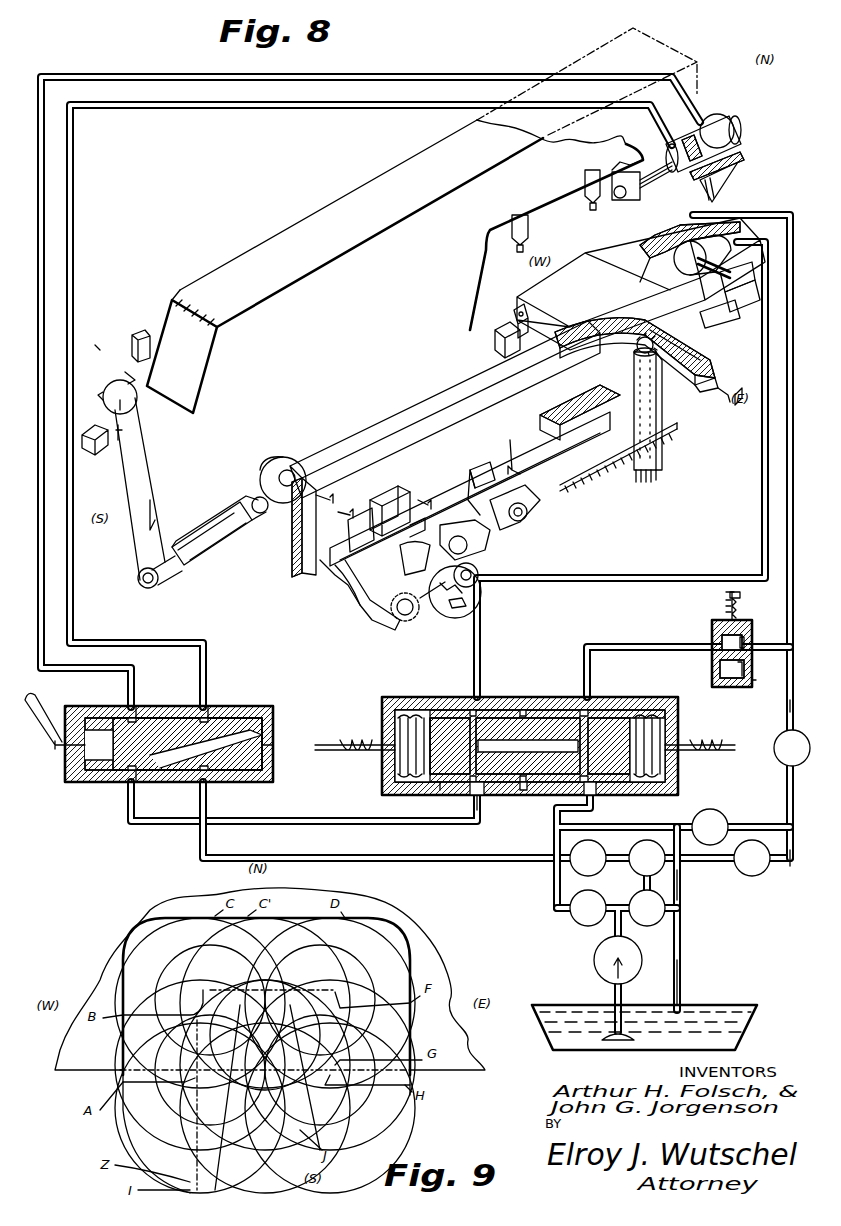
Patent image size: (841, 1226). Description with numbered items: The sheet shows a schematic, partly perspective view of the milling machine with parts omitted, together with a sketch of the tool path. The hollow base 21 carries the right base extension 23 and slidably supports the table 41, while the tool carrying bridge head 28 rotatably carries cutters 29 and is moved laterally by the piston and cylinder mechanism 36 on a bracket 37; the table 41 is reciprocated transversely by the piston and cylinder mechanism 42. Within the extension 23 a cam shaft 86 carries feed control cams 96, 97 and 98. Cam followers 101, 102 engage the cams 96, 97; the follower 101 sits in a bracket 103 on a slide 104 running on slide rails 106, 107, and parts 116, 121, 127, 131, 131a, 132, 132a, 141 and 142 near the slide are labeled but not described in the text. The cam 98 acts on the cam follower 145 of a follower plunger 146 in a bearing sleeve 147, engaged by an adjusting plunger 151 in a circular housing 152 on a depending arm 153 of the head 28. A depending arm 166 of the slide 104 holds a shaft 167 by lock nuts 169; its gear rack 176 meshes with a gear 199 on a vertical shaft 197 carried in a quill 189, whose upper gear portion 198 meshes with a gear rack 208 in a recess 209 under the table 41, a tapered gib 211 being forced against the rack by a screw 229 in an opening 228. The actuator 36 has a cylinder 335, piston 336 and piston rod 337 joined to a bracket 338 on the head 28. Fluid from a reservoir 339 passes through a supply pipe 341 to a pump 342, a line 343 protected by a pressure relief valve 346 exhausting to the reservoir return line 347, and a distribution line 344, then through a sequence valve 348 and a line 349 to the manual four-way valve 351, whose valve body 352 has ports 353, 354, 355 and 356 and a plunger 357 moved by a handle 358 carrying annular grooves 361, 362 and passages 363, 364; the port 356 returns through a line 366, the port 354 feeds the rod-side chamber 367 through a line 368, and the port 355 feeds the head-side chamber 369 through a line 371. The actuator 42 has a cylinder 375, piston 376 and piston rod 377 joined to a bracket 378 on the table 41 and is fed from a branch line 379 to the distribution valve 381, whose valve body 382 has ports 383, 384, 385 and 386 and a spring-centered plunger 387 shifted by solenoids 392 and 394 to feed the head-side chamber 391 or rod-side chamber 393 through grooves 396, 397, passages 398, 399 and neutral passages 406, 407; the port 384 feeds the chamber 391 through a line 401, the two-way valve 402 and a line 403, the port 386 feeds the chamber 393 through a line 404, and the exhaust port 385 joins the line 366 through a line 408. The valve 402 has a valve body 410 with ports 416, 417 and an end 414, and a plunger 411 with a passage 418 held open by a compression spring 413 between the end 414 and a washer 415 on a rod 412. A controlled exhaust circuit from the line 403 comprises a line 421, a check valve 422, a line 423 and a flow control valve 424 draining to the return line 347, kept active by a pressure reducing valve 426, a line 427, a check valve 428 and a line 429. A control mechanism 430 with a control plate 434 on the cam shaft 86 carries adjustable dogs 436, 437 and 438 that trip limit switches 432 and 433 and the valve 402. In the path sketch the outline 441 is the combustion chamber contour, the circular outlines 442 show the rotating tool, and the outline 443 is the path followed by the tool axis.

In FIG. 8, the hollow base 21 is at (735, 300).
In FIG. 8, the right base extension 23 is at (300, 576).
In FIG. 8, the tool carrying bridge head 28 is at (352, 200).
In FIG. 8, the cutters 29 is at (532, 224).
In FIG. 8, the piston and cylinder mechanism 36 is at (746, 112).
In FIG. 8, the bracket 37 is at (745, 164).
In FIG. 8, the table 41 is at (565, 262).
In FIG. 8, the piston and cylinder mechanism 42 is at (618, 244).
In FIG. 8, the cam shaft 86 is at (130, 418).
In FIG. 8, the feed control cam 96 is at (440, 607).
In FIG. 8, the feed control cam 97 is at (425, 545).
In FIG. 8, the feed control cam 98 is at (300, 462).
In FIG. 8, the cam follower 101 is at (398, 618).
In FIG. 8, the cam follower 102 is at (455, 535).
In FIG. 8, the bracket 103 is at (355, 592).
In FIG. 8, the slide 104 is at (290, 560).
In FIG. 8, the slide rail 106 is at (397, 445).
In FIG. 8, the slide rail 107 is at (580, 400).
In FIG. 8, the block 116 is at (385, 492).
In FIG. 8, the screw 121 is at (338, 512).
In FIG. 8, the link 127 is at (335, 570).
In FIG. 8, the bracket 131 is at (365, 540).
In FIG. 8, the bracket 131a is at (475, 470).
In FIG. 8, the screw 132 is at (418, 500).
In FIG. 8, the screw 132a is at (510, 440).
In FIG. 8, the cam plate 141 is at (485, 536).
In FIG. 8, the screw 142 is at (325, 495).
In FIG. 8, the cam follower 145 is at (268, 470).
In FIG. 8, the follower plunger 146 is at (260, 515).
In FIG. 8, the bearing sleeve 147 is at (212, 520).
In FIG. 8, the adjusting plunger 151 is at (138, 585).
In FIG. 8, the circular housing 152 is at (165, 575).
In FIG. 8, the depending arm 153 is at (150, 520).
In FIG. 8, the depending arm 166 is at (540, 485).
In FIG. 8, the shaft 167 is at (583, 478).
In FIG. 8, the lock nut 169 is at (520, 522).
In FIG. 8, the gear rack 176 is at (668, 430).
In FIG. 8, the quill 189 is at (636, 420).
In FIG. 8, the vertical shaft 197 is at (656, 358).
In FIG. 8, the upper gear portion 198 is at (634, 362).
In FIG. 8, the gear 199 is at (636, 468).
In FIG. 8, the gear rack 208 is at (612, 340).
In FIG. 8, the recess 209 is at (698, 368).
In FIG. 8, the tapered adjusting gib 211 is at (686, 345).
In FIG. 8, the opening 228 is at (715, 390).
In FIG. 8, the screw 229 is at (735, 400).
In FIG. 8, the cylinder 335 is at (740, 136).
In FIG. 8, the piston 336 is at (688, 138).
In FIG. 8, the piston rod 337 is at (648, 185).
In FIG. 8, the bracket 338 is at (630, 208).
In FIG. 8, the reservoir 339 is at (752, 1030).
In FIG. 8, the supply pipe 341 is at (612, 1000).
In FIG. 8, the pump 342 is at (594, 960).
In FIG. 8, the line 343 is at (647, 885).
In FIG. 8, the distribution line 344 is at (610, 855).
In FIG. 8, the pressure relief valve 346 is at (643, 922).
In FIG. 8, the reservoir return line 347 is at (680, 966).
In FIG. 8, the sequence valve 348 is at (575, 848).
In FIG. 8, the line 349 is at (272, 859).
In FIG. 8, the four-way distribution valve 351 is at (265, 682).
In FIG. 8, the valve body 352 is at (78, 767).
In FIG. 8, the port 353 is at (208, 785).
In FIG. 8, the port 354 is at (200, 708).
In FIG. 8, the port 355 is at (124, 700).
In FIG. 8, the port 356 is at (126, 785).
In FIG. 8, the plunger 357 is at (262, 727).
In FIG. 8, the handle 358 is at (42, 683).
In FIG. 8, the annular groove 361 is at (200, 705).
In FIG. 8, the annular groove 362 is at (138, 712).
In FIG. 8, the passage 363 is at (182, 775).
In FIG. 8, the passage 364 is at (273, 756).
In FIG. 8, the line 366 is at (272, 828).
In FIG. 8, the chamber 367 is at (648, 150).
In FIG. 8, the line 368 is at (232, 104).
In FIG. 8, the chamber 369 is at (718, 120).
In FIG. 8, the line 371 is at (332, 76).
In FIG. 8, the cylinder 375 is at (657, 242).
In FIG. 8, the piston 376 is at (690, 248).
In FIG. 8, the piston rod 377 is at (733, 280).
In FIG. 8, the bracket 378 is at (720, 315).
In FIG. 8, the branch line 379 is at (556, 830).
In FIG. 8, the distribution valve 381 is at (403, 684).
In FIG. 8, the valve body 382 is at (380, 708).
In FIG. 8, the port 383 is at (596, 795).
In FIG. 8, the port 384 is at (575, 708).
In FIG. 8, the port 385 is at (478, 795).
In FIG. 8, the port 386 is at (478, 708).
In FIG. 8, the movable plunger 387 is at (522, 708).
In FIG. 8, the chamber 391 is at (640, 282).
In FIG. 8, the solenoid 392 is at (360, 762).
In FIG. 8, the chamber 393 is at (706, 262).
In FIG. 8, the solenoid 394 is at (728, 756).
In FIG. 8, the annular groove 396 is at (615, 708).
In FIG. 8, the annular groove 397 is at (512, 708).
In FIG. 8, the passage 398 is at (540, 708).
In FIG. 8, the passage 399 is at (527, 790).
In FIG. 8, the line 401 is at (647, 645).
In FIG. 8, the mechanically operated two-way valve 402 is at (696, 628).
In FIG. 8, the line 403 is at (790, 220).
In FIG. 8, the line 404 is at (765, 462).
In FIG. 8, the passage 406 is at (612, 710).
In FIG. 8, the passage 407 is at (440, 790).
In FIG. 8, the line 408 is at (470, 820).
In FIG. 8, the valve body 410 is at (718, 663).
In FIG. 8, the movable plunger 411 is at (752, 668).
In FIG. 8, the rod 412 is at (735, 592).
In FIG. 8, the compression spring 413 is at (742, 612).
In FIG. 8, the end 414 is at (726, 615).
In FIG. 8, the plate or washer 415 is at (726, 595).
In FIG. 8, the port 416 is at (722, 642).
In FIG. 8, the port 417 is at (742, 665).
In FIG. 8, the passage 418 is at (746, 640).
In FIG. 8, the line 421 is at (786, 704).
In FIG. 8, the check valve 422 is at (773, 748).
In FIG. 8, the line 423 is at (760, 822).
In FIG. 8, the flow control valve 424 is at (710, 807).
In FIG. 8, the pressure reducing valve 426 is at (670, 827).
In FIG. 8, the line 427 is at (680, 862).
In FIG. 8, the check valve 428 is at (752, 878).
In FIG. 8, the line 429 is at (800, 866).
In FIG. 8, the control mechanism 430 is at (99, 336).
In FIG. 8, the limit switch 432 is at (180, 300).
In FIG. 8, the limit switch 433 is at (99, 460).
In FIG. 8, the control plate 434 is at (125, 372).
In FIG. 8, the adjustable dog 436 is at (552, 879).
In FIG. 8, the adjustable dog 437 is at (566, 930).
In FIG. 8, the adjustable dog 438 is at (118, 440).
In FIG. 9, the outline 441 is at (123, 1050).
In FIG. 9, the circular outlines 442 is at (190, 900).
In FIG. 9, the outline 443 is at (150, 1130).